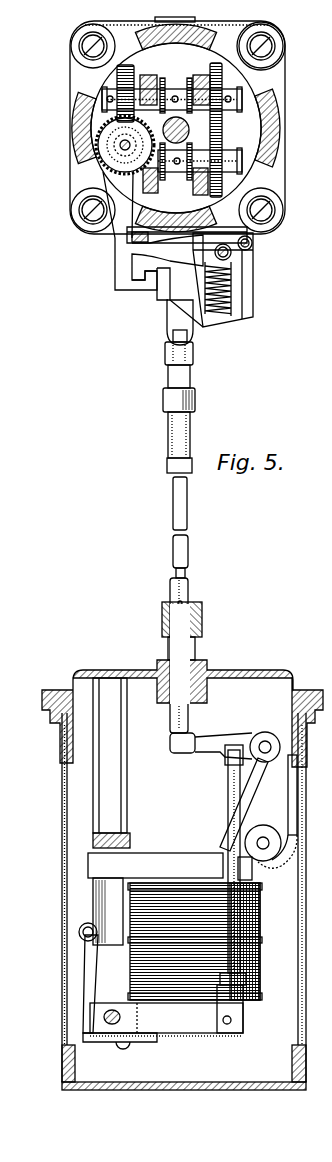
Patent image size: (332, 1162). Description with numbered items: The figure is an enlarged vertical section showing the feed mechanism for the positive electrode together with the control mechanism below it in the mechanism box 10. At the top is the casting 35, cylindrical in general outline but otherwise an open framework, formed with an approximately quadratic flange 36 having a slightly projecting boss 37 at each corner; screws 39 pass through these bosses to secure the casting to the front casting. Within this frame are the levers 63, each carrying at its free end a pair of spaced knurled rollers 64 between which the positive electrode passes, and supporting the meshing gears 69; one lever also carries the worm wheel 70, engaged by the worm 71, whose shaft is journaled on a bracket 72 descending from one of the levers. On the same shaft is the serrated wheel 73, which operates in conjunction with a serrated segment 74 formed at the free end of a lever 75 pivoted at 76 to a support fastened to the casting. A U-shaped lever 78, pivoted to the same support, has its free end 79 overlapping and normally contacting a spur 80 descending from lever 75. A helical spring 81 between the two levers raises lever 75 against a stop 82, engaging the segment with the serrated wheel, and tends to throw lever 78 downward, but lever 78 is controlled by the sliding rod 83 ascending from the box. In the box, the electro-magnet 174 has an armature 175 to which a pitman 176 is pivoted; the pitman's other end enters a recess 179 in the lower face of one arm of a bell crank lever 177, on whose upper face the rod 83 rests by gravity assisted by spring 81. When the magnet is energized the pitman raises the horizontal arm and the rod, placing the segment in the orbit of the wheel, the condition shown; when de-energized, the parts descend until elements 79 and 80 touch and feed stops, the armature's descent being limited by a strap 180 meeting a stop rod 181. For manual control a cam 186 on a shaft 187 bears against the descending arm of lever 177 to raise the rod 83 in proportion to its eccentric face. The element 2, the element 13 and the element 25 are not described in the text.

The top segment 2 is at (163, 23).
The mechanism box 10 is at (290, 900).
The gear case plate 13 is at (164, 127).
The shaft disc 25 is at (188, 128).
The casting 35 is at (173, 29).
The flange 36 is at (272, 181).
The boss 37 is at (278, 56).
The screw 39 is at (270, 44).
The lever 63 is at (176, 135).
The knurled roller 64 is at (165, 80).
The meshing gear 69 is at (222, 80).
The worm wheel 70 is at (118, 78).
The worm 71 is at (112, 138).
The bracket 72 is at (130, 143).
The serrated wheel 73 is at (106, 150).
The serrated segment 74 is at (112, 180).
The lever 75 is at (150, 252).
The pivot 76 is at (231, 256).
The lever 78 is at (252, 311).
The free end 79 is at (173, 272).
The spur 80 is at (145, 292).
The helical spring 81 is at (233, 290).
The stop 82 is at (132, 238).
The sliding rod 83 is at (188, 520).
The electro-magnet 174 is at (262, 931).
The armature 175 is at (195, 1028).
The pitman 176 is at (232, 795).
The bell crank lever 177 is at (223, 740).
The recess 179 is at (230, 757).
The strap 180 is at (93, 978).
The stop rod 181 is at (115, 913).
The cam 186 is at (272, 865).
The shaft 187 is at (265, 843).